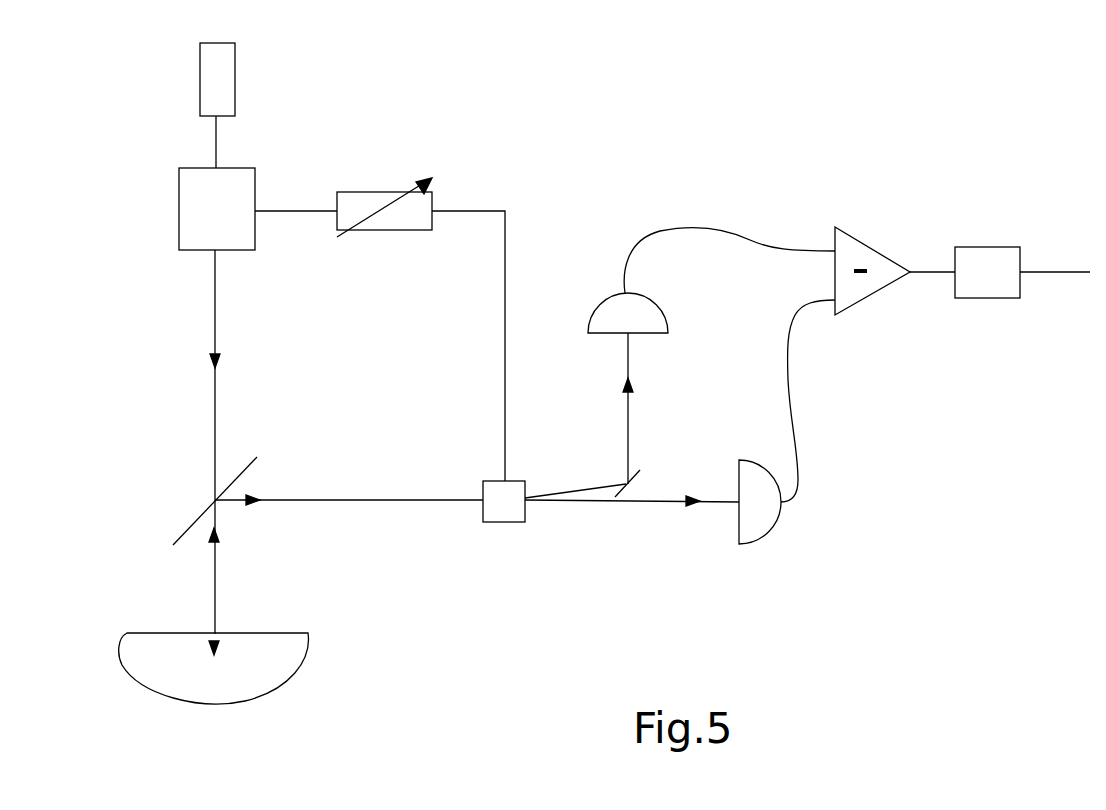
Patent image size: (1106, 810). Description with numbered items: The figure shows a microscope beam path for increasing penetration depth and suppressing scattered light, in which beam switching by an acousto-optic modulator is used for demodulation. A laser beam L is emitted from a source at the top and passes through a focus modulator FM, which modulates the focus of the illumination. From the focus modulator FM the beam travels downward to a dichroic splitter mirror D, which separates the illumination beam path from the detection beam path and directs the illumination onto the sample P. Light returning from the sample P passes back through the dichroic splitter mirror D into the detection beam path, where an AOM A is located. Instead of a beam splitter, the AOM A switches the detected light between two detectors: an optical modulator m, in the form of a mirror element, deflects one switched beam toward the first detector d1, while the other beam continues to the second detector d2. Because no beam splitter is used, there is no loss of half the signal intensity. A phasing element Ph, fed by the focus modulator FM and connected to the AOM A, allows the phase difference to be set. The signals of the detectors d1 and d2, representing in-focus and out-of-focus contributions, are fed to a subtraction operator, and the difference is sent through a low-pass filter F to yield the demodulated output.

The laser beam L is at (199, 79).
The focus modulator FM is at (181, 209).
The element for phasing Ph is at (384, 194).
The dichroic splitter mirror D is at (203, 521).
The sample P is at (229, 668).
The AOM A is at (504, 520).
The optical modulator m is at (642, 485).
The first detector d1 is at (654, 313).
The second detector d2 is at (761, 523).
The filter F is at (987, 272).